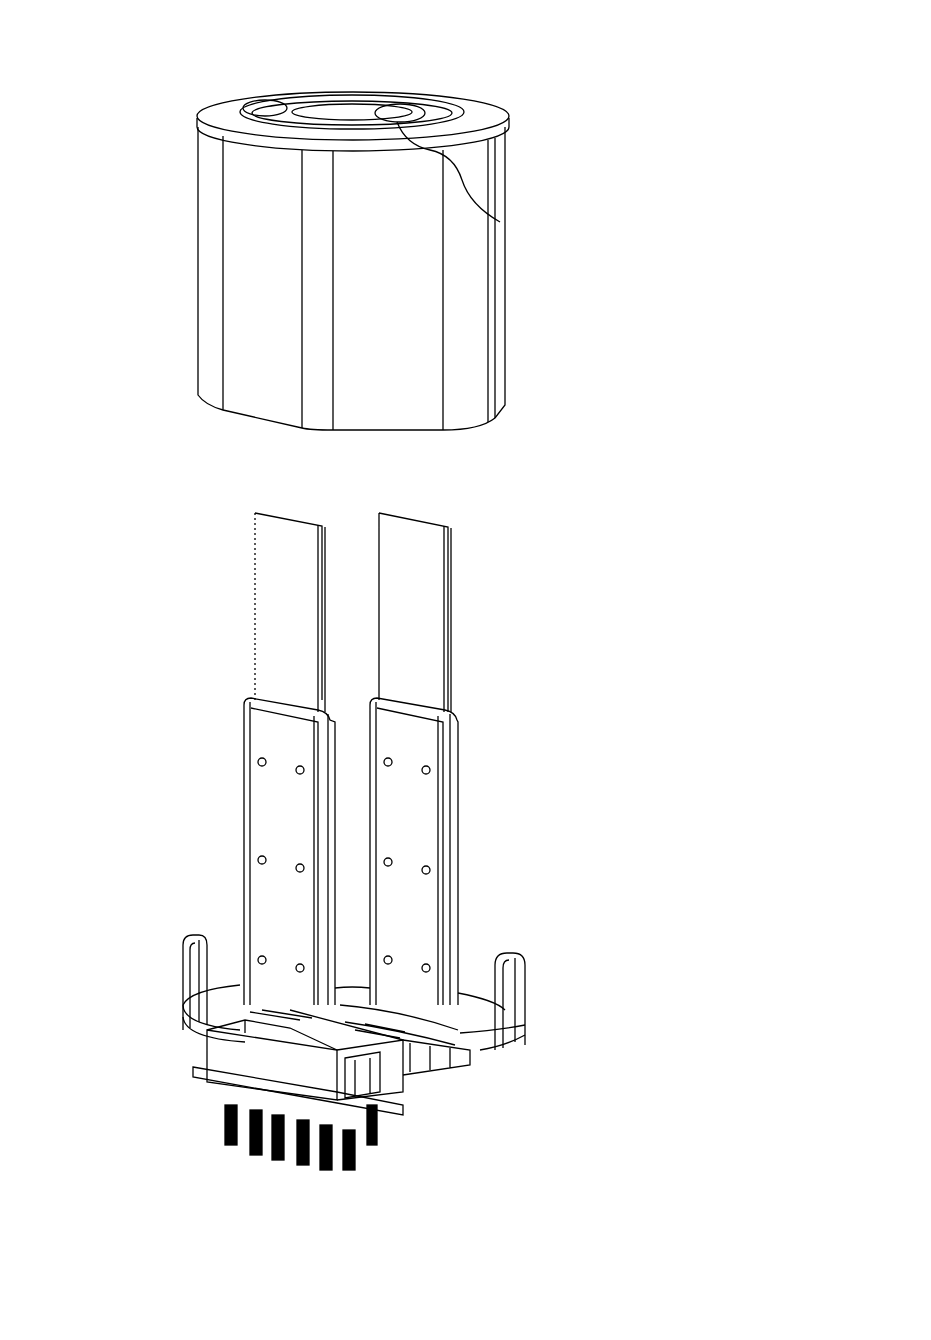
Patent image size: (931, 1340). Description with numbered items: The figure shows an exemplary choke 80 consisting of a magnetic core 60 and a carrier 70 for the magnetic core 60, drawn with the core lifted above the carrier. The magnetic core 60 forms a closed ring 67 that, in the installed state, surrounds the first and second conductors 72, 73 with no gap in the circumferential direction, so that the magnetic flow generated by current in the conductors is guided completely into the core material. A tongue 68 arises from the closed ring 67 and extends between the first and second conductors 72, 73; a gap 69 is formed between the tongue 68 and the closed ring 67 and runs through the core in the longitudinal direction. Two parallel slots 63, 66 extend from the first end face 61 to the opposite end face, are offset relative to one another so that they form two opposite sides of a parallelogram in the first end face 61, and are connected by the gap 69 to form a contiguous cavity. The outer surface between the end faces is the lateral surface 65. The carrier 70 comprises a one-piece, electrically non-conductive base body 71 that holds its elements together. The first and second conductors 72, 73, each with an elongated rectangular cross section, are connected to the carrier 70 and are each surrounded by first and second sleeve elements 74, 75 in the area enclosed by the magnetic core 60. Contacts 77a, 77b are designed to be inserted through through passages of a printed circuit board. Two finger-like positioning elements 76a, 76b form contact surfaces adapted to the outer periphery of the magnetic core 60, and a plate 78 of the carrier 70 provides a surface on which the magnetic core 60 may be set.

The magnetic core 60 is at (155, 165).
The first end face 61 is at (510, 112).
The first slot 63 is at (455, 108).
The lateral surface 65 is at (323, 255).
The second slot 66 is at (225, 107).
The closed ring 67 is at (413, 95).
The tongue 68 is at (345, 92).
The gap 69 is at (500, 222).
The carrier 70 is at (168, 822).
The base body 71 is at (460, 1058).
The first conductor 72 is at (425, 637).
The second conductor 73 is at (272, 630).
The first sleeve element 74 is at (418, 833).
The second sleeve element 75 is at (262, 808).
The positioning element 76a is at (518, 1010).
The positioning element 76b is at (180, 998).
The contact 77a is at (195, 1095).
The contact 77b is at (405, 1100).
The plate 78 is at (190, 1027).
The choke 80 is at (700, 145).